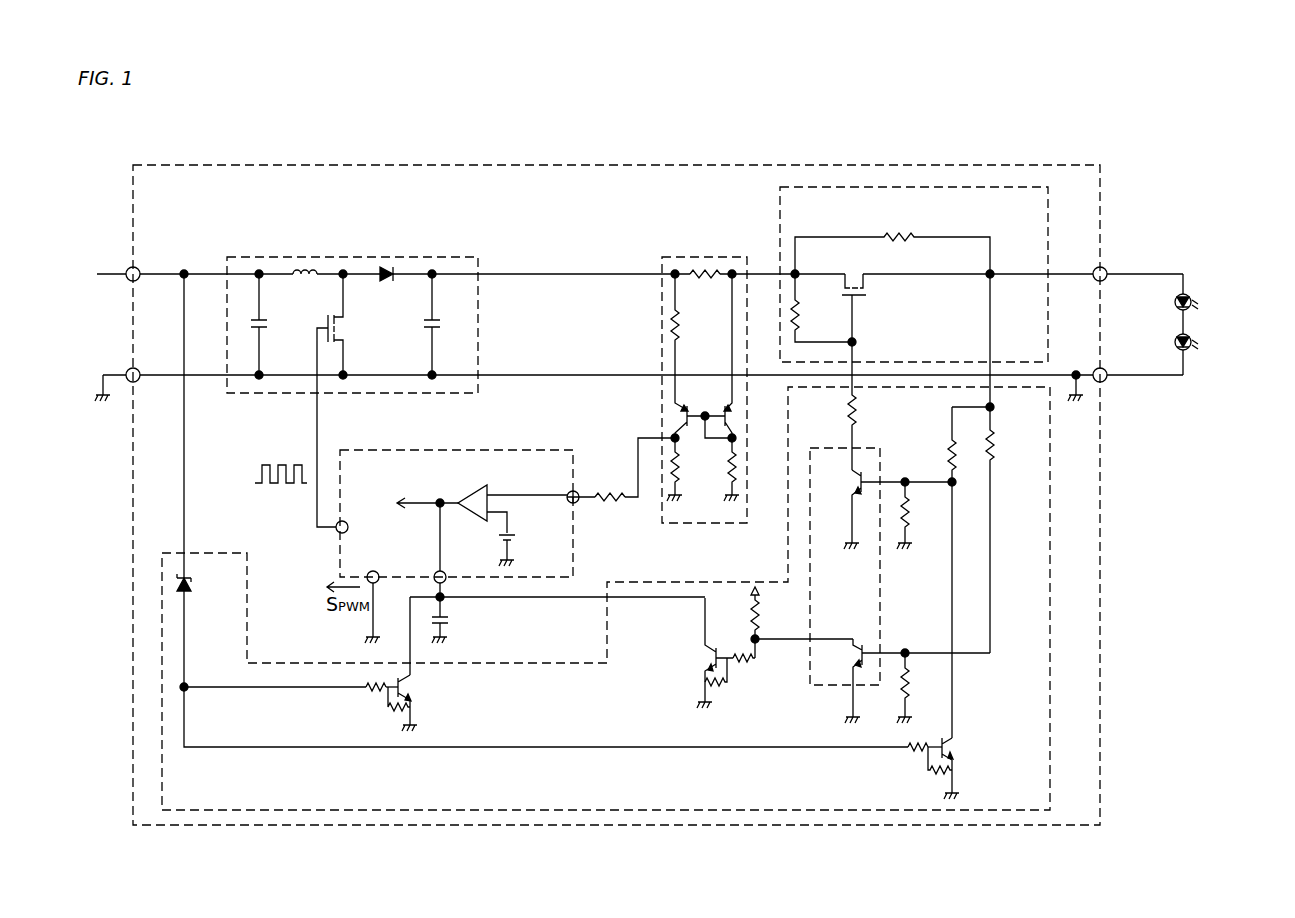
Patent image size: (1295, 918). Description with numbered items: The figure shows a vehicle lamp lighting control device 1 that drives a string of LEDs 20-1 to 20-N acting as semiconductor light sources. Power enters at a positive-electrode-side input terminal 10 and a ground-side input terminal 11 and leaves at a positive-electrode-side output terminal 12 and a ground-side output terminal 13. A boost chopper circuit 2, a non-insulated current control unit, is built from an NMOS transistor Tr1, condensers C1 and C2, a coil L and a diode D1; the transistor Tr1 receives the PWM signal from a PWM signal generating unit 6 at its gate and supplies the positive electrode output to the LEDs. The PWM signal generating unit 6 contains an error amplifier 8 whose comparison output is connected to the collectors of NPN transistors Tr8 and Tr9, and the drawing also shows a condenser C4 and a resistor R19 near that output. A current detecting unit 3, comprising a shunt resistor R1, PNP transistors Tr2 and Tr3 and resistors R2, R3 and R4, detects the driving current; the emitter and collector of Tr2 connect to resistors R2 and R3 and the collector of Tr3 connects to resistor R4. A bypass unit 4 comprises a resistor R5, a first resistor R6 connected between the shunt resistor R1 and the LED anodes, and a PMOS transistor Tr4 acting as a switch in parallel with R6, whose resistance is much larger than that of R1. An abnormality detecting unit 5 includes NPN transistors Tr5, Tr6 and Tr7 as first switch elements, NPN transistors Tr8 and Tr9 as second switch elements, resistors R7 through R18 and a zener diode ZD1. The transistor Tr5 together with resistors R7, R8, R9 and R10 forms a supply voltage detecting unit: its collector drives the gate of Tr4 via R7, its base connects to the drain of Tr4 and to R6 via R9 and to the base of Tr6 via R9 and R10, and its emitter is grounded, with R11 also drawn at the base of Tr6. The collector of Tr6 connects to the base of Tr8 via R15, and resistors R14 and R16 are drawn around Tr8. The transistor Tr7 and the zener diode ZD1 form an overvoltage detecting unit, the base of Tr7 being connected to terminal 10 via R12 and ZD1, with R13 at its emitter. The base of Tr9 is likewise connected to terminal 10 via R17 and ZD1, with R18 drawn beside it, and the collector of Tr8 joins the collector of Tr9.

The lighting control device 1 is at (1022, 132).
The boost chopper circuit 2 is at (404, 257).
The current detecting unit 3 is at (710, 257).
The bypass unit 4 is at (841, 187).
The abnormality detecting unit 5 is at (762, 812).
The PWM signal generating unit 6 is at (575, 450).
The error amplifier 8 is at (470, 492).
The positive-electrode-side input terminal 10 is at (138, 268).
The ground-side input terminal 11 is at (138, 369).
The positive-electrode-side output terminal 12 is at (1105, 268).
The ground-side output terminal 13 is at (1105, 369).
The LED 20-1 is at (1220, 303).
The LED 20-N is at (1221, 343).
The condenser C1 is at (274, 324).
The condenser C2 is at (447, 324).
The capacitor C4 is at (454, 620).
The coil L is at (305, 287).
The diode D1 is at (388, 286).
The zener diode ZD1 is at (208, 585).
The NMOS transistor Tr1 is at (348, 401).
The PNP transistor Tr2 is at (657, 419).
The PNP transistor Tr3 is at (750, 419).
The PMOS transistor Tr4 is at (870, 308).
The NPN transistor Tr5 is at (840, 509).
The NPN transistor Tr6 is at (840, 681).
The NPN transistor Tr7 is at (968, 767).
The NPN transistor Tr8 is at (691, 653).
The NPN transistor Tr9 is at (422, 703).
The shunt resistor R1 is at (703, 288).
The resistor R2 is at (691, 337).
The resistor R3 is at (689, 469).
The resistor R4 is at (746, 469).
The resistor R5 is at (821, 308).
The first resistor R6 is at (892, 241).
The resistor R7 is at (868, 406).
The resistor R8 is at (919, 515).
The resistor R9 is at (932, 572).
The resistor R10 is at (1011, 463).
The resistor R11 is at (925, 688).
The resistor R12 is at (905, 759).
The resistor R13 is at (931, 772).
The resistor R14 is at (778, 622).
The resistor R15 is at (755, 670).
The resistor R16 is at (738, 684).
The resistor R17 is at (361, 697).
The resistor R18 is at (389, 712).
The resistor R19 is at (614, 511).